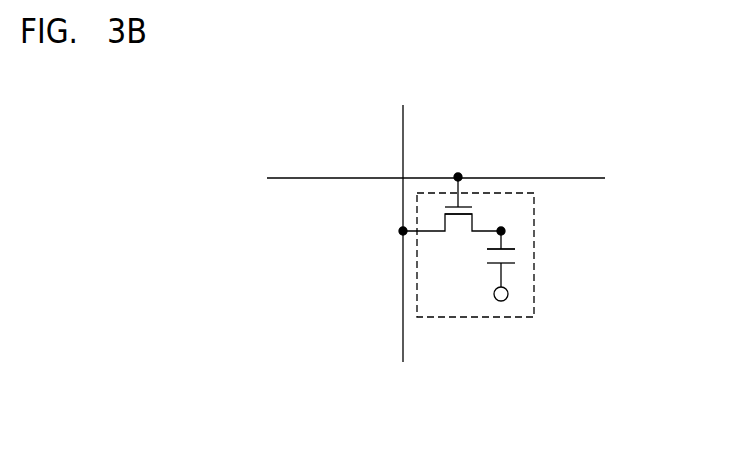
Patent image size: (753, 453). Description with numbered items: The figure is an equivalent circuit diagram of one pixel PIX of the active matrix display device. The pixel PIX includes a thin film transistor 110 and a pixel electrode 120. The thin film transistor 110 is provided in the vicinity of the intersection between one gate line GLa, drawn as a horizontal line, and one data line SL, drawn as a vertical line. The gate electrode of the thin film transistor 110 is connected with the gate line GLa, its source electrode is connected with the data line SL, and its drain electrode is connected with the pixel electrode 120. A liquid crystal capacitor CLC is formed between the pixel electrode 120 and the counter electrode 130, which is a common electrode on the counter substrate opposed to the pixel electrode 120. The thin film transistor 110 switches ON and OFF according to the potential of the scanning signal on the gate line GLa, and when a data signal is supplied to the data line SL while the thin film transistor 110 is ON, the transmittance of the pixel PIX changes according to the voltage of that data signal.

The data line SL is at (403, 119).
The gate line GLa is at (305, 178).
The pixel PIX is at (518, 192).
The thin film transistor 110 is at (481, 213).
The pixel electrode 120 is at (505, 228).
The liquid crystal capacitor CLC is at (527, 256).
The counter electrode 130 is at (508, 294).